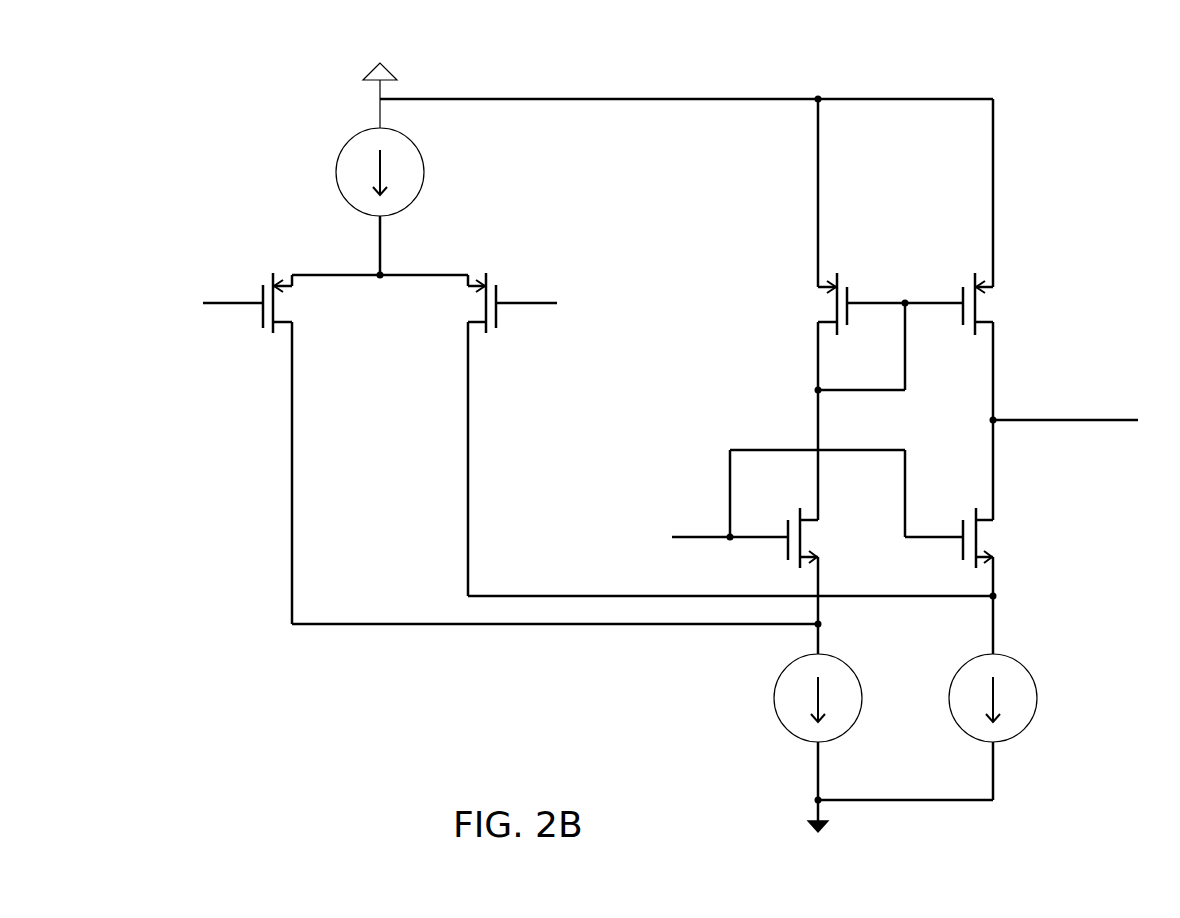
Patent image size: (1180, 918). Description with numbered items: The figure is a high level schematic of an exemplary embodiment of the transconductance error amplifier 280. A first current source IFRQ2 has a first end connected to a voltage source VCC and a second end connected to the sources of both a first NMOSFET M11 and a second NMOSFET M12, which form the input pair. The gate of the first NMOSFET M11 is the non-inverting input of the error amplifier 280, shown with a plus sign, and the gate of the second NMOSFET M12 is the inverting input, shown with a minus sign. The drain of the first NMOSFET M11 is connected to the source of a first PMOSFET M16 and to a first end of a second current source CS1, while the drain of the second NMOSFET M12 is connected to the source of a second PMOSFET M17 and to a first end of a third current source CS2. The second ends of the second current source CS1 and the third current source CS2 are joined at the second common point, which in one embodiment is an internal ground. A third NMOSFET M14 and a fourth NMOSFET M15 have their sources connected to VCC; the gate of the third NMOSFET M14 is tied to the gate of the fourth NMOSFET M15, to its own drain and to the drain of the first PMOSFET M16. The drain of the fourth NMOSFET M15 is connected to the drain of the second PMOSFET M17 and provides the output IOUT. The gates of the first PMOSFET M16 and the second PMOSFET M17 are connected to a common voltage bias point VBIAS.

The error amplifier 280 is at (1094, 81).
The first NMOSFET M11 is at (273, 303).
The second NMOSFET M12 is at (482, 303).
The third NMOSFET M14 is at (802, 304).
The fourth NMOSFET M15 is at (1007, 304).
The first PMOSFET M16 is at (828, 538).
The second PMOSFET M17 is at (1007, 538).
The second current source CS1 is at (788, 698).
The third current source CS2 is at (1035, 698).
The first current source IFRQ2 is at (416, 172).
The voltage source VCC is at (382, 75).
The common voltage bias point VBIAS is at (689, 525).
The output IOUT is at (1074, 441).